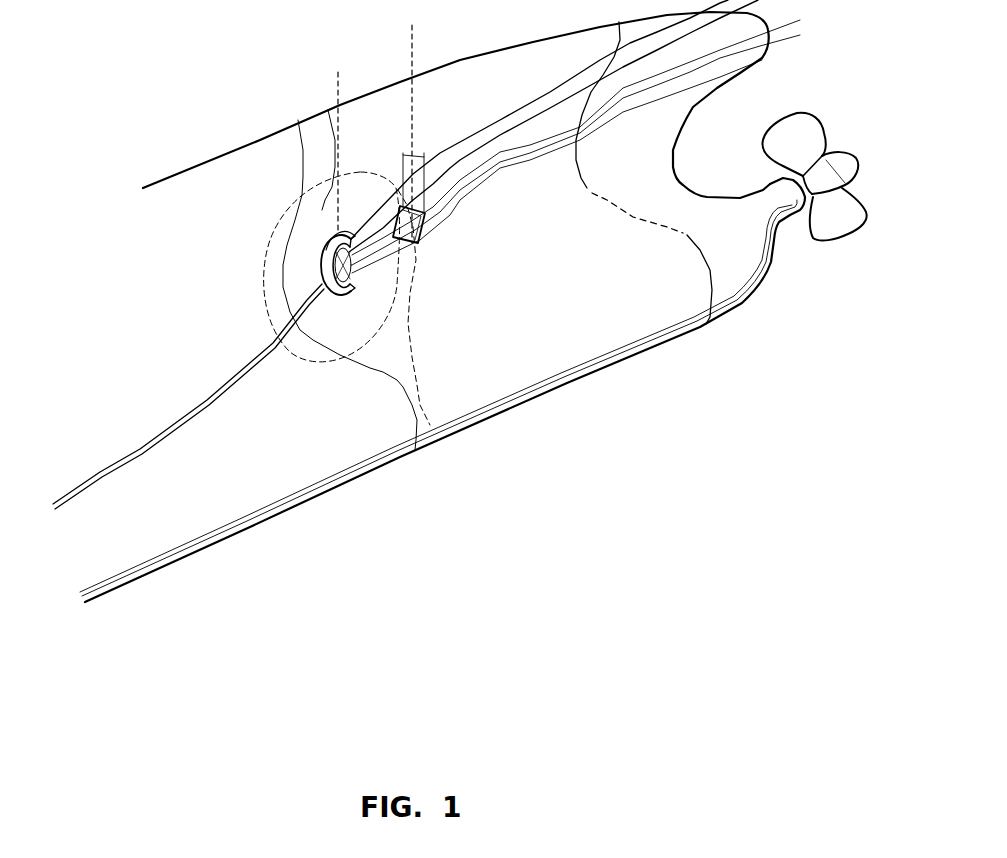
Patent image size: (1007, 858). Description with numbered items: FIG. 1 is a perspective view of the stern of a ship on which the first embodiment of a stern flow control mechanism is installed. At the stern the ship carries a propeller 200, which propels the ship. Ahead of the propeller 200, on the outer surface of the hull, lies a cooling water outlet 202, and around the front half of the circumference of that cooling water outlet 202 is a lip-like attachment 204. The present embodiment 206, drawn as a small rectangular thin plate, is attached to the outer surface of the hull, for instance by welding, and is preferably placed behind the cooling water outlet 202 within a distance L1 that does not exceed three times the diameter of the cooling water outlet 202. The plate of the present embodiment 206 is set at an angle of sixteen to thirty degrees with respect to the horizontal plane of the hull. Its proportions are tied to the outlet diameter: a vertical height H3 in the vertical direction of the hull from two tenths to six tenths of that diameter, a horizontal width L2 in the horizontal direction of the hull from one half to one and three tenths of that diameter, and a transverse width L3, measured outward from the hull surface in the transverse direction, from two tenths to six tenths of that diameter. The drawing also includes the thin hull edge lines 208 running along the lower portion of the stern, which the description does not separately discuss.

The propeller 200 is at (814, 248).
The cooling water outlet 202 is at (474, 333).
The lip-like attachment 204 is at (298, 120).
The stern flow control mechanism (first embodiment) 206 is at (442, 390).
The panel edge lines 208 is at (188, 450).
The distance L1 is at (412, 28).
The horizontal width L2 is at (423, 243).
The transverse width L3 is at (412, 162).
The vertical height H3 is at (428, 222).